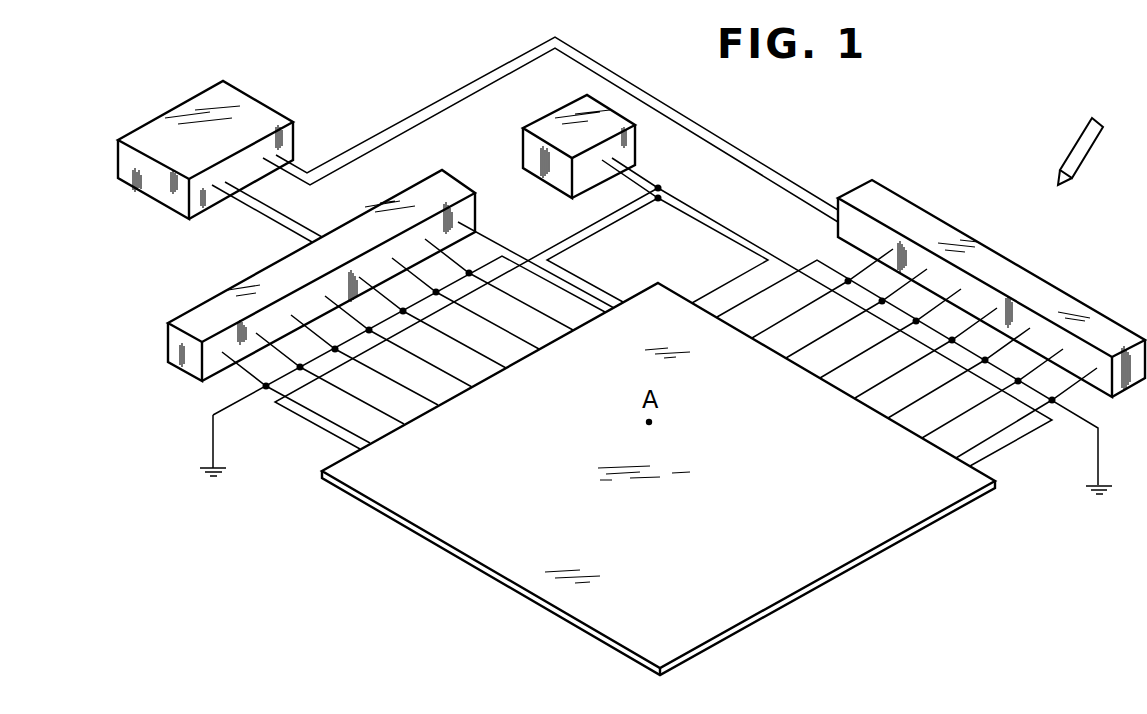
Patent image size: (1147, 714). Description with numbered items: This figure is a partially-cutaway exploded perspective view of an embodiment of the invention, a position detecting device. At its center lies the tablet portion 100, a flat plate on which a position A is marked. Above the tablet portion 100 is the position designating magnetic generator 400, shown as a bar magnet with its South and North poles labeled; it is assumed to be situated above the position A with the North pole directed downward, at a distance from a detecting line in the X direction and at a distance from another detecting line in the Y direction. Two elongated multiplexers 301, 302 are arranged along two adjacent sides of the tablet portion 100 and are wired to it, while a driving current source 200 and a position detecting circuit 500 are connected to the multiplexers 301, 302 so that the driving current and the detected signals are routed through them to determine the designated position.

The tablet portion 100 is at (792, 588).
The driving current source 200 is at (530, 158).
The multiplexer 301 is at (1087, 308).
The multiplexer 302 is at (208, 313).
The position designating magnetic generator 400 is at (1080, 150).
The position detecting circuit 500 is at (262, 111).